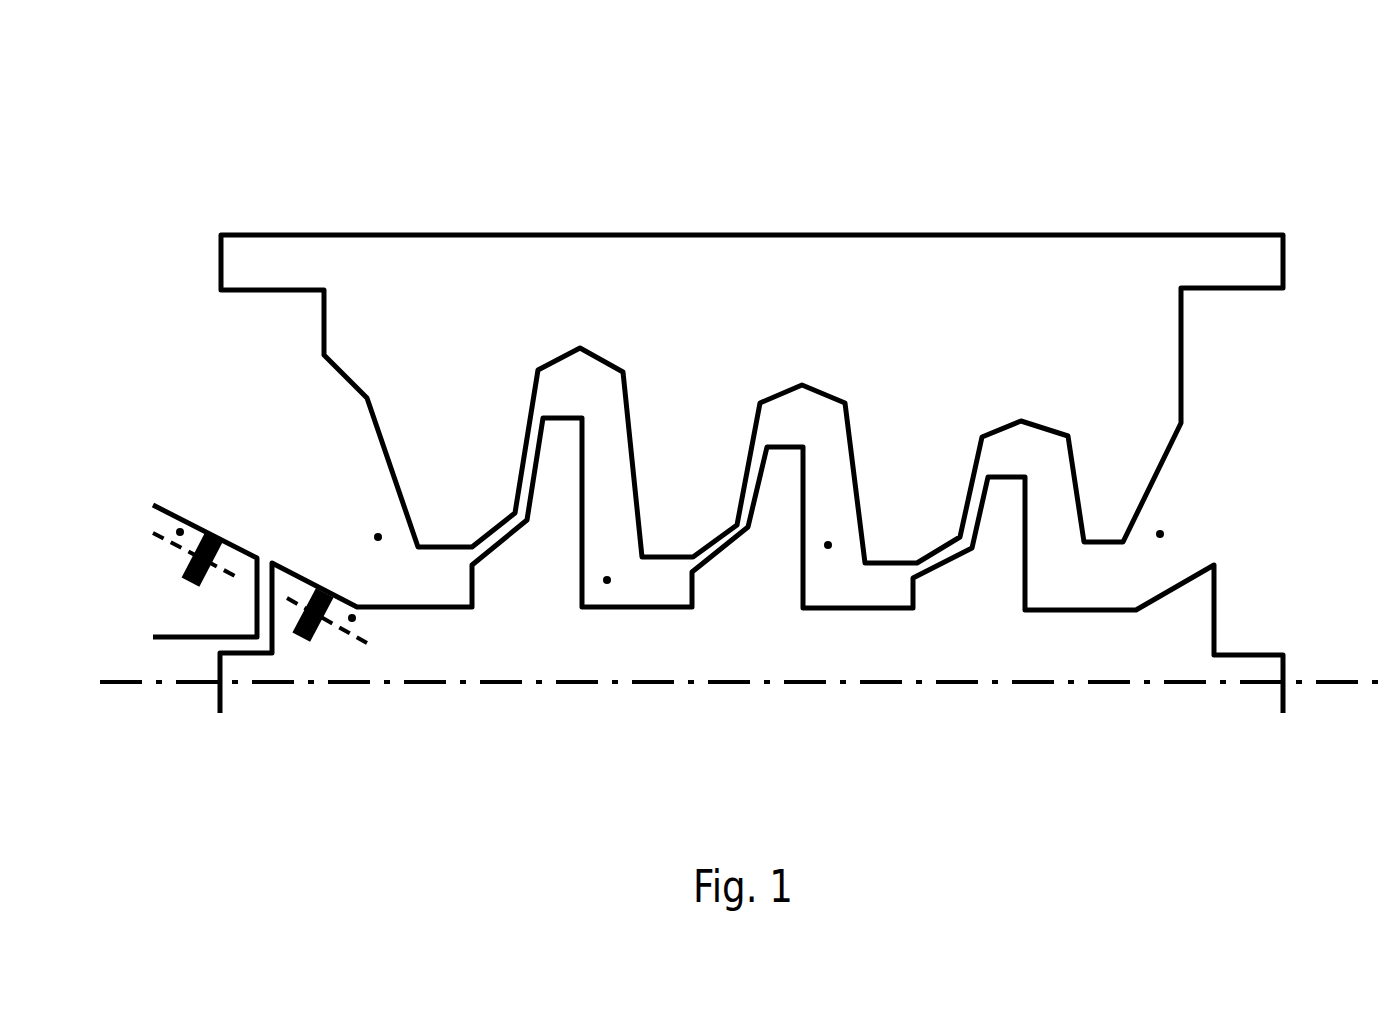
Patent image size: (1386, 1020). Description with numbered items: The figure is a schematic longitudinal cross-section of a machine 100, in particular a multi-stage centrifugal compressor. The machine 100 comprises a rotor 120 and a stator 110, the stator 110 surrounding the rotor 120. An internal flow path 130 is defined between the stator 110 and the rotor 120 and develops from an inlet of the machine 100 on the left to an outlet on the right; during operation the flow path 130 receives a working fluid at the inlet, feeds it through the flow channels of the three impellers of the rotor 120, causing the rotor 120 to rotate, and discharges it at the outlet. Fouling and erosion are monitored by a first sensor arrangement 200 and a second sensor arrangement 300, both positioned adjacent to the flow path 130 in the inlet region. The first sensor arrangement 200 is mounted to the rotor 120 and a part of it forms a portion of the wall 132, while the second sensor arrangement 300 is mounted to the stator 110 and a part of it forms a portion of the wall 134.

The machine 100 is at (738, 140).
The stator 110 is at (431, 293).
The rotor 120 is at (528, 585).
The internal flow path 130 is at (363, 553).
The wall 132 is at (352, 618).
The wall 134 is at (180, 532).
The first sensor arrangement 200 is at (312, 640).
The second sensor arrangement 300 is at (200, 587).